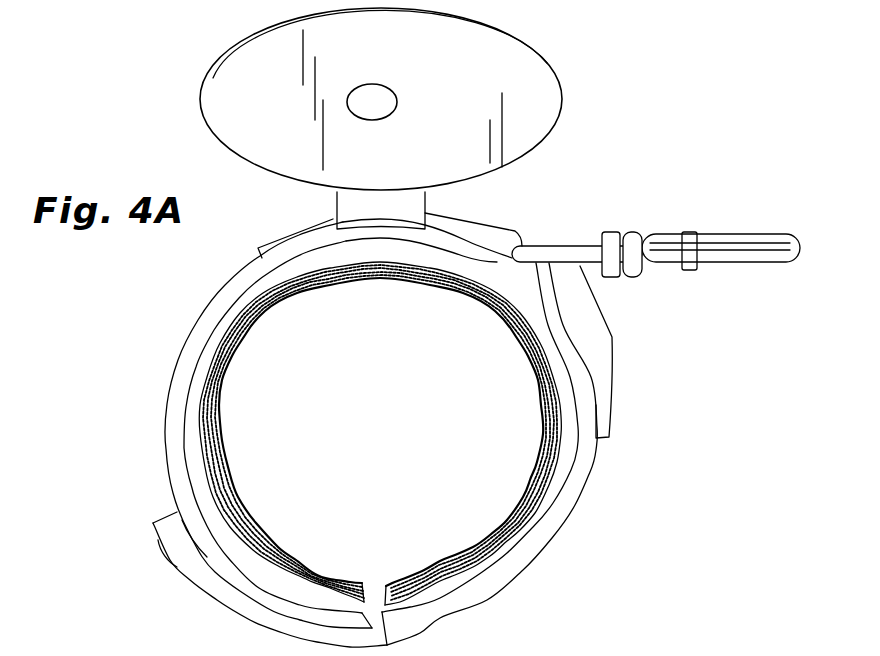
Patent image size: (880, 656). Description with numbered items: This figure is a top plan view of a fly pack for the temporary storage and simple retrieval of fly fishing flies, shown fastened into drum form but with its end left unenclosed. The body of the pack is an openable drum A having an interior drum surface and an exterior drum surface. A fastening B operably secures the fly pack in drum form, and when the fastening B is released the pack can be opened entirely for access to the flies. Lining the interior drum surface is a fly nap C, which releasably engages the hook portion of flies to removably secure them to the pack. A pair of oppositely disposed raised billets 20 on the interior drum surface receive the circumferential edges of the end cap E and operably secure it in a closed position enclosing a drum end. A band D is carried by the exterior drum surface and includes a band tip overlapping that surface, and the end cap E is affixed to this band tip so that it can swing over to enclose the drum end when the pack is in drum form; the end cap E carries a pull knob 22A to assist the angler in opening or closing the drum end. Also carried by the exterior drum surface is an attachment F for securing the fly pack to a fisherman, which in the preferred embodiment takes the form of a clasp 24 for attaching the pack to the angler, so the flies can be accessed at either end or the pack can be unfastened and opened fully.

The end cap E is at (443, 53).
The pull knob 22A is at (380, 100).
The band D is at (425, 197).
The openable drum A is at (215, 297).
The raised billets 20 is at (565, 463).
The fly nap C is at (527, 363).
The fastening B is at (183, 568).
The attachment F is at (612, 337).
The clasp 24 is at (755, 258).